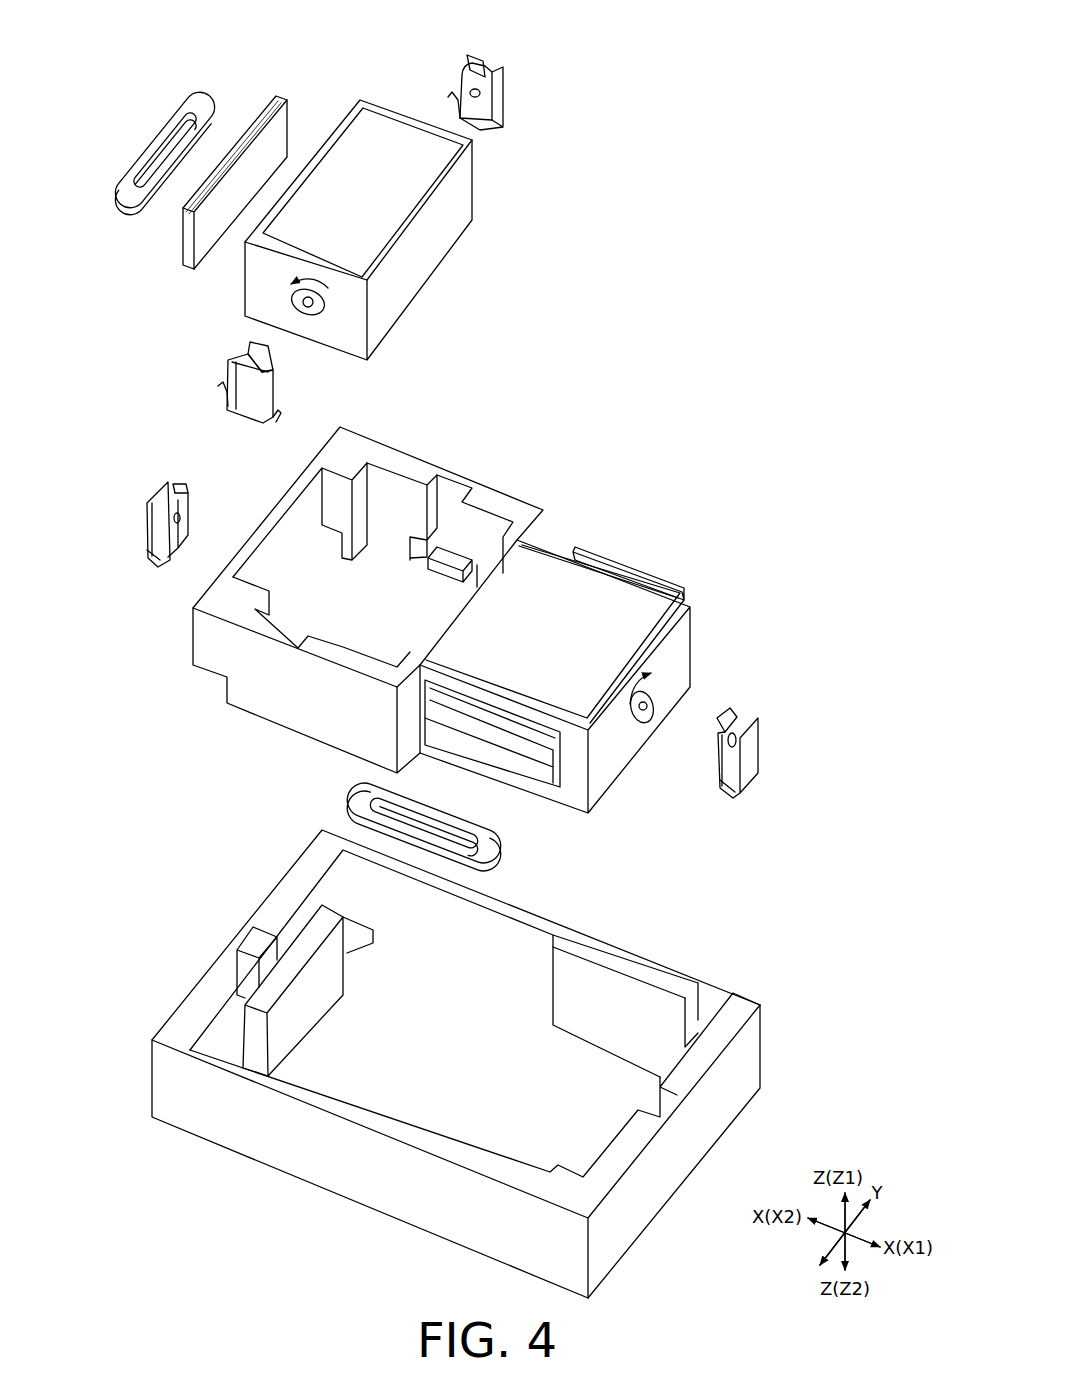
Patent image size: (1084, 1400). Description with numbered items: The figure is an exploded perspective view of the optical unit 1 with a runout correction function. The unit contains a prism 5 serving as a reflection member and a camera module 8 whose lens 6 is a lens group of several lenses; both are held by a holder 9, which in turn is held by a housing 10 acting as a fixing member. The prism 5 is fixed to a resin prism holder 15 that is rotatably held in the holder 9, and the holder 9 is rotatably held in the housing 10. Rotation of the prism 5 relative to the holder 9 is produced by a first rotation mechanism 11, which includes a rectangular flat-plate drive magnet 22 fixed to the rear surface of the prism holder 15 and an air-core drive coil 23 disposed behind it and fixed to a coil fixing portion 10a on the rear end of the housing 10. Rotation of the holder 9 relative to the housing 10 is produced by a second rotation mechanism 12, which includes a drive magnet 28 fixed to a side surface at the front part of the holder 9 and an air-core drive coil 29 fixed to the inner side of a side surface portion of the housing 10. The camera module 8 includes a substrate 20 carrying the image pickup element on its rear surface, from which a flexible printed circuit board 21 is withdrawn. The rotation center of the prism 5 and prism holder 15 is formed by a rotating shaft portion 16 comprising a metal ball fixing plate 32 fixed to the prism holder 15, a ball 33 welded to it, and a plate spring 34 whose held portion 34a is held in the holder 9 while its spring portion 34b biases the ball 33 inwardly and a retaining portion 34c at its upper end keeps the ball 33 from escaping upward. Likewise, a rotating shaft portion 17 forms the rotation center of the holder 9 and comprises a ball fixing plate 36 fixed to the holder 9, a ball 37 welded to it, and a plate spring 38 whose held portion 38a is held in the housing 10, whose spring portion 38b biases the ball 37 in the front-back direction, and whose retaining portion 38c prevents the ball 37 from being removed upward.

The optical unit 1 is at (767, 62).
The prism 5 is at (427, 283).
The lens 6 is at (458, 614).
The camera module 8 is at (552, 553).
The holder 9 is at (485, 485).
The housing 10 is at (456, 1064).
The coil fixing portion 10a is at (297, 933).
The first rotation mechanism 11 is at (124, 124).
The second rotation mechanism 12 is at (573, 852).
The prism holder 15 is at (378, 97).
The rotating shaft portion 16 is at (521, 53).
The rotating shaft portion 17 is at (118, 490).
The substrate 20 is at (608, 678).
The flexible printed circuit board 21 is at (635, 570).
The drive magnet 22 is at (282, 88).
The drive coil 23 is at (193, 95).
The drive magnet 28 is at (531, 782).
The drive coil 29 is at (357, 793).
The ball fixing plate 32 is at (317, 313).
The ball 33 is at (306, 312).
The plate spring 34 is at (365, 216).
The held portion 34a is at (365, 216).
The spring portion 34b is at (455, 79).
The retaining portion 34c is at (465, 67).
The ball fixing plate 36 is at (633, 720).
The ball 37 is at (647, 713).
The plate spring 38 is at (488, 636).
The held portion 38a is at (488, 636).
The spring portion 38b is at (190, 528).
The retaining portion 38c is at (185, 493).